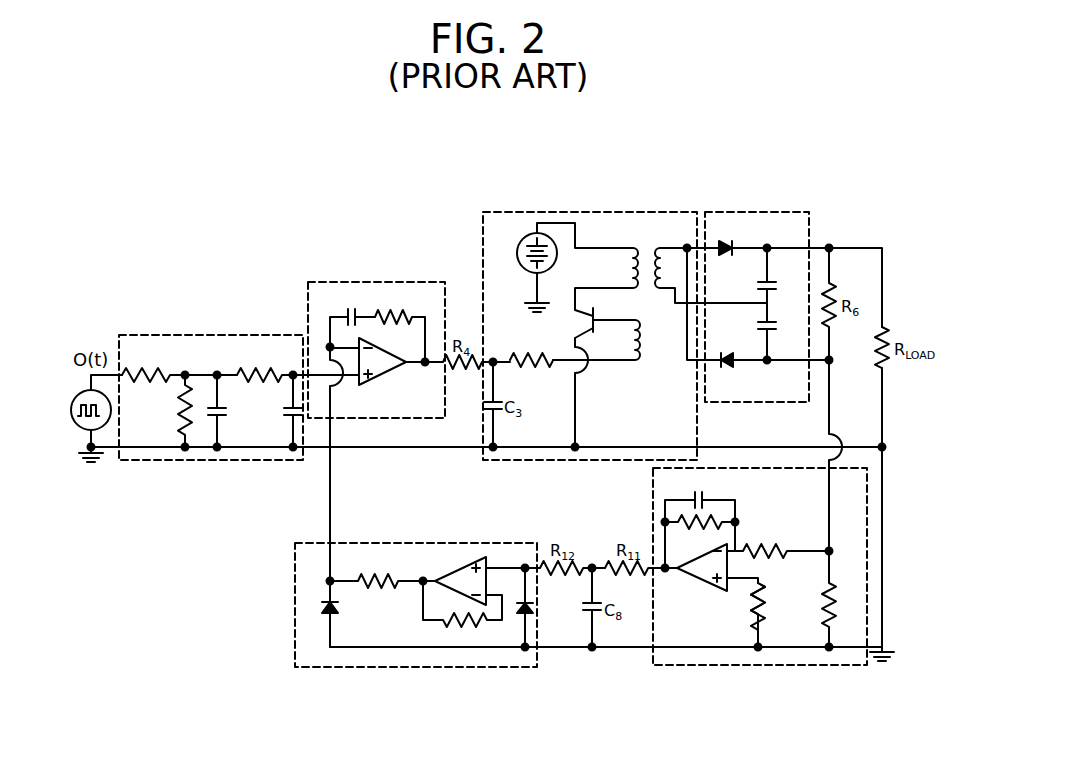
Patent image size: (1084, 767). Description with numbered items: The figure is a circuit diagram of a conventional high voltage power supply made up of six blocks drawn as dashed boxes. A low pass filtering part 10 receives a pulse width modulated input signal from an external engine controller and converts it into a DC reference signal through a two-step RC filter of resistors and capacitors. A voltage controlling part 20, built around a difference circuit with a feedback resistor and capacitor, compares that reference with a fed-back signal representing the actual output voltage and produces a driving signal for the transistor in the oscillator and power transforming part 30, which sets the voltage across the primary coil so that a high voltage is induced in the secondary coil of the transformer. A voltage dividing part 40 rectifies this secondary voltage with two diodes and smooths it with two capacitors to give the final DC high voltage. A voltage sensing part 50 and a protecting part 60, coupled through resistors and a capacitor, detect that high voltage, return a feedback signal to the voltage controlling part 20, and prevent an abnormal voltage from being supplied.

The low pass filtering part 10 is at (209, 335).
The voltage controlling part 20 is at (372, 282).
The oscillator and power transforming part 30 is at (586, 212).
The voltage dividing part 40 is at (752, 212).
The voltage sensing part 50 is at (758, 665).
The protecting part 60 is at (415, 667).